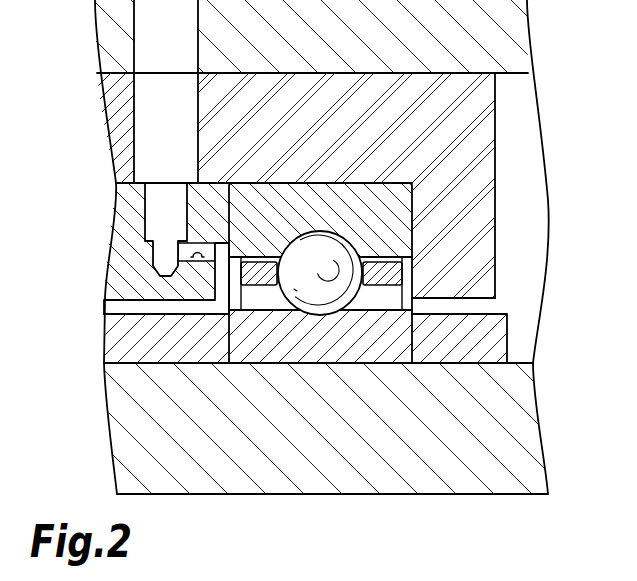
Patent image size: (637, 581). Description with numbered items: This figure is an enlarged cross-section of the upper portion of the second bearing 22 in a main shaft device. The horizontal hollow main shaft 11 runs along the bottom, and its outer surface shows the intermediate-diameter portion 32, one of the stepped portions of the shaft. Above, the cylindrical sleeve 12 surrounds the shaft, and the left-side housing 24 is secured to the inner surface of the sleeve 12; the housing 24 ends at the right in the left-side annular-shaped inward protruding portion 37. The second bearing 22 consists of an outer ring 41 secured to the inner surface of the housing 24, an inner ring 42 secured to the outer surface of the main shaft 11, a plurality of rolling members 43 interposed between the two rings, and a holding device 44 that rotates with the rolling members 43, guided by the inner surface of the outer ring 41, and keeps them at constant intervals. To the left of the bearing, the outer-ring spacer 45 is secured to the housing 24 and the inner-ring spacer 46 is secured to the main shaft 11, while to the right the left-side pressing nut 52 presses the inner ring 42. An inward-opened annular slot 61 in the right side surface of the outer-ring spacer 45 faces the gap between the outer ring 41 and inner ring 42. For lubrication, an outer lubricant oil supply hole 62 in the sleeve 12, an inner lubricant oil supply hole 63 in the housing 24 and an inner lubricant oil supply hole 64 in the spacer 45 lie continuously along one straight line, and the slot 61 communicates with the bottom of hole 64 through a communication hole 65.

The main shaft 11 is at (115, 440).
The sleeve 12 is at (510, 27).
The second bearing 22 is at (312, 364).
The left-side housing 24 is at (487, 123).
The intermediate-diameter portion 32 is at (530, 354).
The left-side annular-shaped inward protruding portion 37 is at (487, 210).
The outer ring 41 is at (323, 195).
The inner ring 42 is at (380, 341).
The rolling members 43 is at (303, 303).
The holding device 44 is at (395, 273).
The outer-ring spacer 45 is at (116, 258).
The inner-ring spacer 46 is at (115, 336).
The left-side pressing nut 52 is at (488, 337).
The annular-shaped slot 61 is at (212, 300).
The outer lubricant oil supply hole 62 is at (138, 28).
The inner lubricant oil supply hole 63 is at (138, 130).
The inner lubricant oil supply hole 64 is at (150, 203).
The communication hole 65 is at (200, 251).